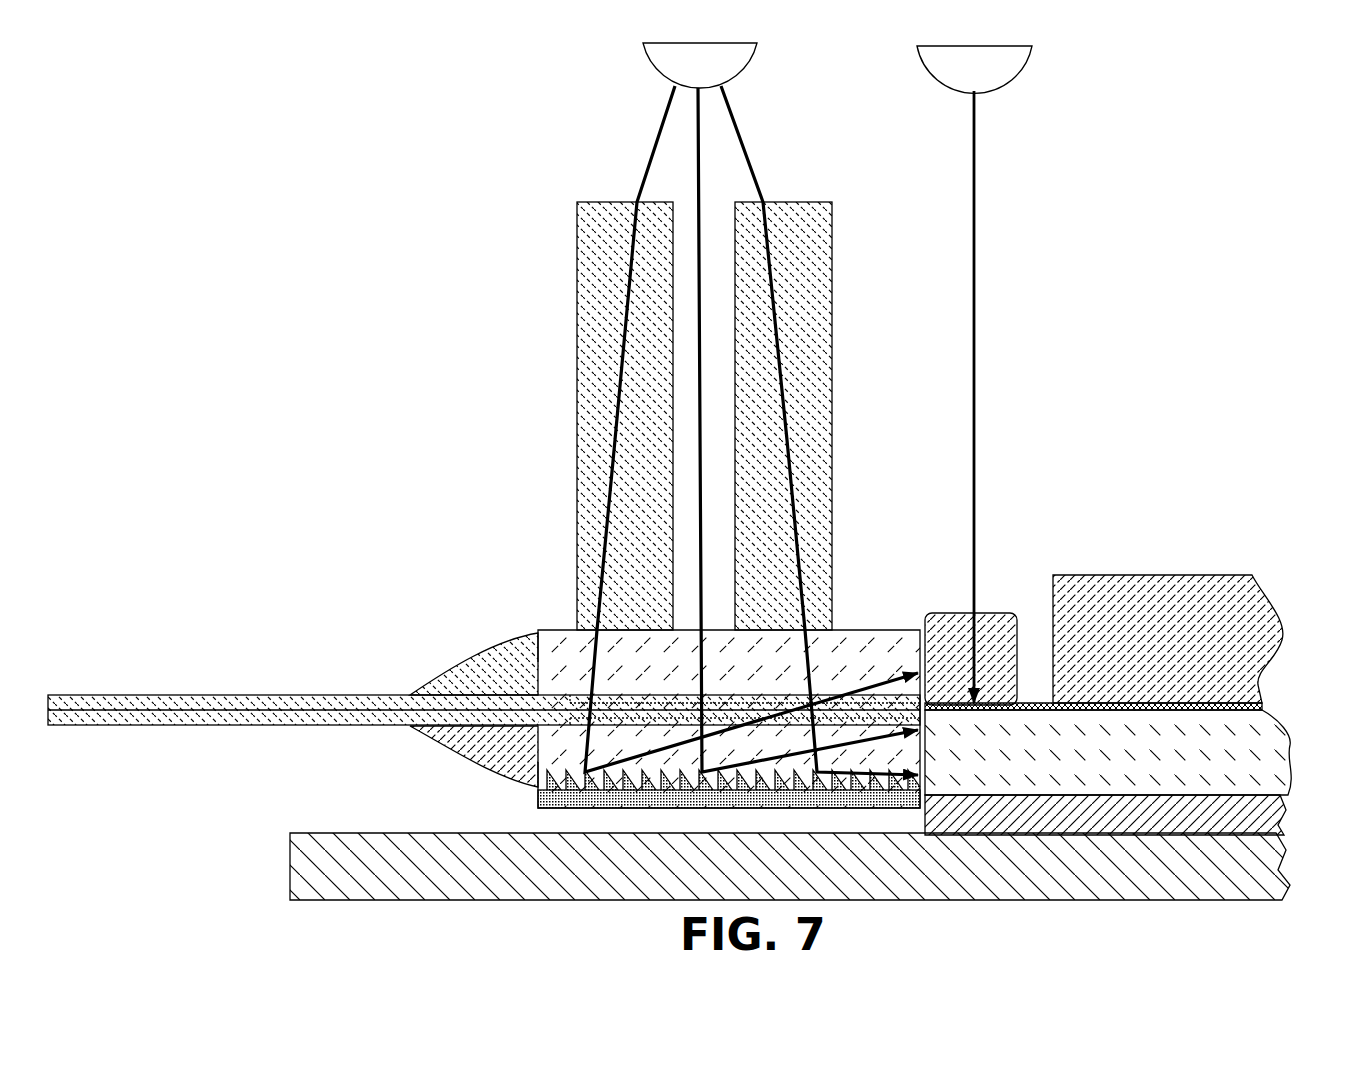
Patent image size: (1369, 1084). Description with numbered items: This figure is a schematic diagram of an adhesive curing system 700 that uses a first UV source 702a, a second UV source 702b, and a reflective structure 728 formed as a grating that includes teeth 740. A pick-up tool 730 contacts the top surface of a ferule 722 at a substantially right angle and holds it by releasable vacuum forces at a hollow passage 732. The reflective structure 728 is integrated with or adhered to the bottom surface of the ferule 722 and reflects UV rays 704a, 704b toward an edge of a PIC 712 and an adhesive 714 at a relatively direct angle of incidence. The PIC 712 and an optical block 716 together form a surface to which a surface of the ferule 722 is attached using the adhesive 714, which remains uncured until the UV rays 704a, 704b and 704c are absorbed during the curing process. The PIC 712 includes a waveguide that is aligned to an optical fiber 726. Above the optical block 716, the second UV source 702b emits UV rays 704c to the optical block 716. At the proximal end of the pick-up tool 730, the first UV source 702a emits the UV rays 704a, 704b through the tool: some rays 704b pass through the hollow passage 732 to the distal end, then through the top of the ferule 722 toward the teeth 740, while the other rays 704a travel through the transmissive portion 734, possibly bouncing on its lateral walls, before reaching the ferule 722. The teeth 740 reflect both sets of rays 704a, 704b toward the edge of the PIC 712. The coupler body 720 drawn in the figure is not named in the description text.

The adhesive curing system 700 is at (250, 180).
The first UV source 702a is at (655, 78).
The second UV source 702b is at (1020, 73).
The UV rays 704a is at (655, 142).
The UV rays 704b is at (697, 180).
The UV rays 704c is at (976, 213).
The PIC 712 is at (1283, 740).
The adhesive 714 is at (925, 795).
The optical block 716 is at (992, 615).
The coupler body 720 is at (413, 665).
The ferule 722 is at (538, 652).
The optical fiber 726 is at (220, 695).
The reflective structure 728 is at (620, 808).
The pick-up tool 730 is at (653, 368).
The hollow passage 732 is at (678, 200).
The transmissive portion 734 is at (577, 213).
The teeth 740 is at (570, 792).